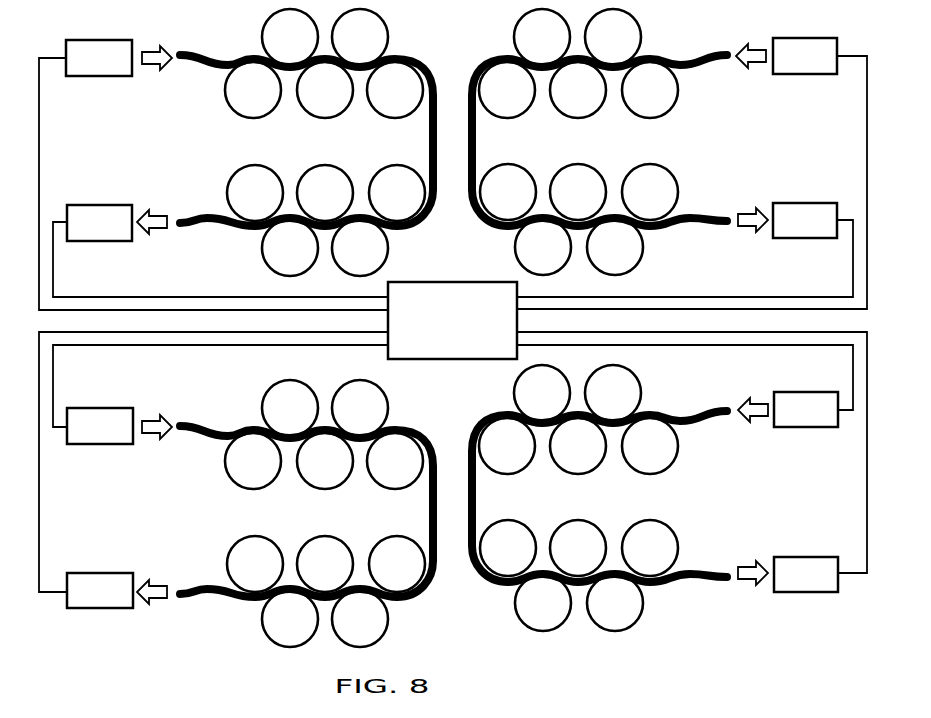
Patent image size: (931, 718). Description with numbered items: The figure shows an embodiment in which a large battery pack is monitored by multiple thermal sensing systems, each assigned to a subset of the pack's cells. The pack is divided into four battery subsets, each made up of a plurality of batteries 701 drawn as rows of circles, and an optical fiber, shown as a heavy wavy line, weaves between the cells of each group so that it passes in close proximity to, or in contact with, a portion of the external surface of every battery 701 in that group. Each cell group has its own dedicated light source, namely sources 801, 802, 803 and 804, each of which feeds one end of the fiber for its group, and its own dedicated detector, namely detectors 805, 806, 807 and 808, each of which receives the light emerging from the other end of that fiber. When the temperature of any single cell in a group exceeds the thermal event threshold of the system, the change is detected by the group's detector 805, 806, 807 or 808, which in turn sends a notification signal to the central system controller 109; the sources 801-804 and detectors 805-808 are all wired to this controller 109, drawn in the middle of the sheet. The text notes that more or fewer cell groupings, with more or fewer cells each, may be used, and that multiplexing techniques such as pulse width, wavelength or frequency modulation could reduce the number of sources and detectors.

The batteries 701 is at (451, 328).
The source 801 is at (83, 68).
The source 802 is at (789, 66).
The source 803 is at (790, 418).
The source 804 is at (84, 436).
The detector 805 is at (83, 232).
The detector 806 is at (789, 230).
The detector 807 is at (790, 584).
The detector 808 is at (84, 600).
The system controller 109 is at (432, 332).